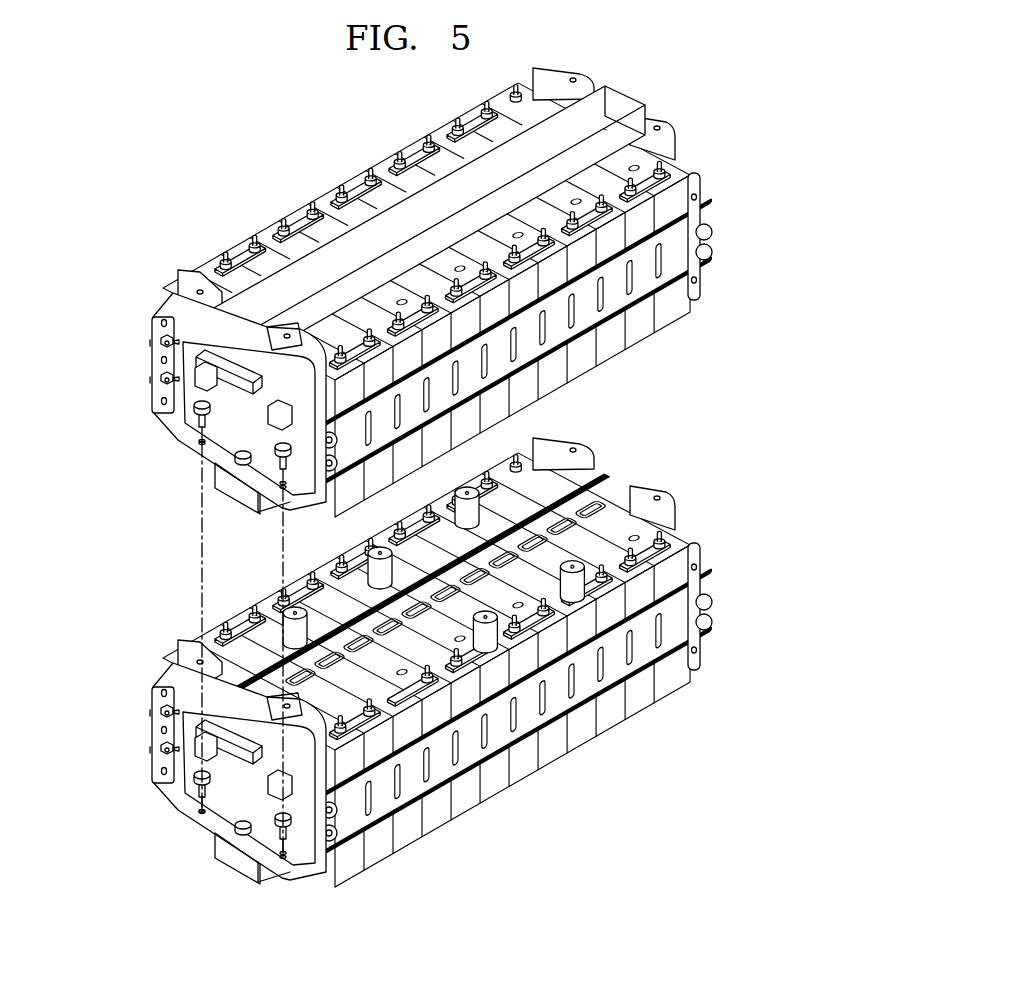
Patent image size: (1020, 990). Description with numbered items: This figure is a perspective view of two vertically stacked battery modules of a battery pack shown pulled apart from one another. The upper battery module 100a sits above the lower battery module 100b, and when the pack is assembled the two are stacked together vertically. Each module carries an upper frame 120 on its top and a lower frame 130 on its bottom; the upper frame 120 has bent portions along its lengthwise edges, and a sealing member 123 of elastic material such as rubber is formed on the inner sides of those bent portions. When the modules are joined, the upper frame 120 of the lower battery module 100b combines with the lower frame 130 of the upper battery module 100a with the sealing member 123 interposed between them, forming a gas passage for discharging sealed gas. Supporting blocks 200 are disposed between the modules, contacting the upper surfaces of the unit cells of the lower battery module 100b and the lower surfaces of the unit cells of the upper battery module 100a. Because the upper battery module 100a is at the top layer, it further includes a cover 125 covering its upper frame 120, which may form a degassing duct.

The upper battery module 100a is at (402, 295).
The lower battery module 100b is at (402, 665).
The upper frame 120 is at (216, 338).
The sealing member 123 is at (212, 333).
The cover 125 is at (258, 298).
The lower frame 130 is at (210, 493).
The supporting block 200 is at (580, 582).